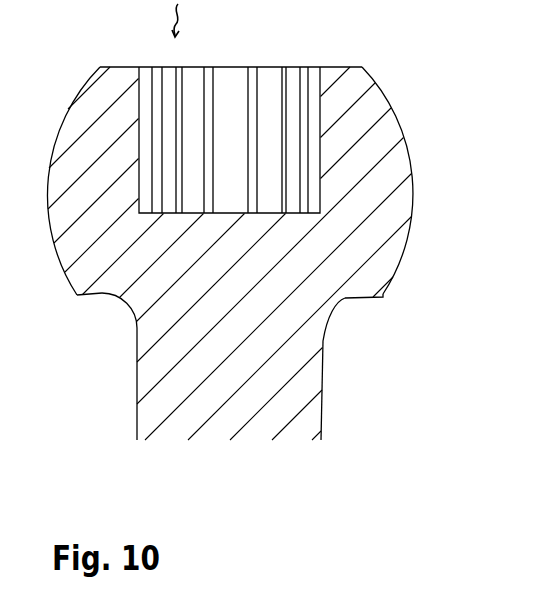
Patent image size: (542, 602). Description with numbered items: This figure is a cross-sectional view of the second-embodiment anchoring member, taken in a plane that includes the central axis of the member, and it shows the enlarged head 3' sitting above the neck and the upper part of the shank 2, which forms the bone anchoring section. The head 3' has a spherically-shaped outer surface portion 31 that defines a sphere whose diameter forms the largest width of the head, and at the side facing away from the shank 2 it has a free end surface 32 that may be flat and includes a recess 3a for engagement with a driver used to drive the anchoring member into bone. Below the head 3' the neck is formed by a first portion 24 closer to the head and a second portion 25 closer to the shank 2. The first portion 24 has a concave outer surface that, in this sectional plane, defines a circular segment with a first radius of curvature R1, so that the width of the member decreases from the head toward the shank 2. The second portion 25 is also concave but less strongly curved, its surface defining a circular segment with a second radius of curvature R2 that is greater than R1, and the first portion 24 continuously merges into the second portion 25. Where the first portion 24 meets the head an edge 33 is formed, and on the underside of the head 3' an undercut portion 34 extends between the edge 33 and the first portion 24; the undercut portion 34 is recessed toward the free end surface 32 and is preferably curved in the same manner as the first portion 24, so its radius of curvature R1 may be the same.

The shank 2 is at (160, 421).
The recess 3a is at (237, 83).
The head 3' is at (393, 159).
The spherically-shaped outer surface portion 31 is at (67, 117).
The free end surface 32 is at (332, 68).
The edge 33 is at (96, 296).
The undercut portion 34 is at (104, 293).
The first portion 24 is at (118, 302).
The second portion 25 is at (136, 350).
The first radius of curvature R1 is at (315, 270).
The second radius of curvature R2 is at (456, 370).